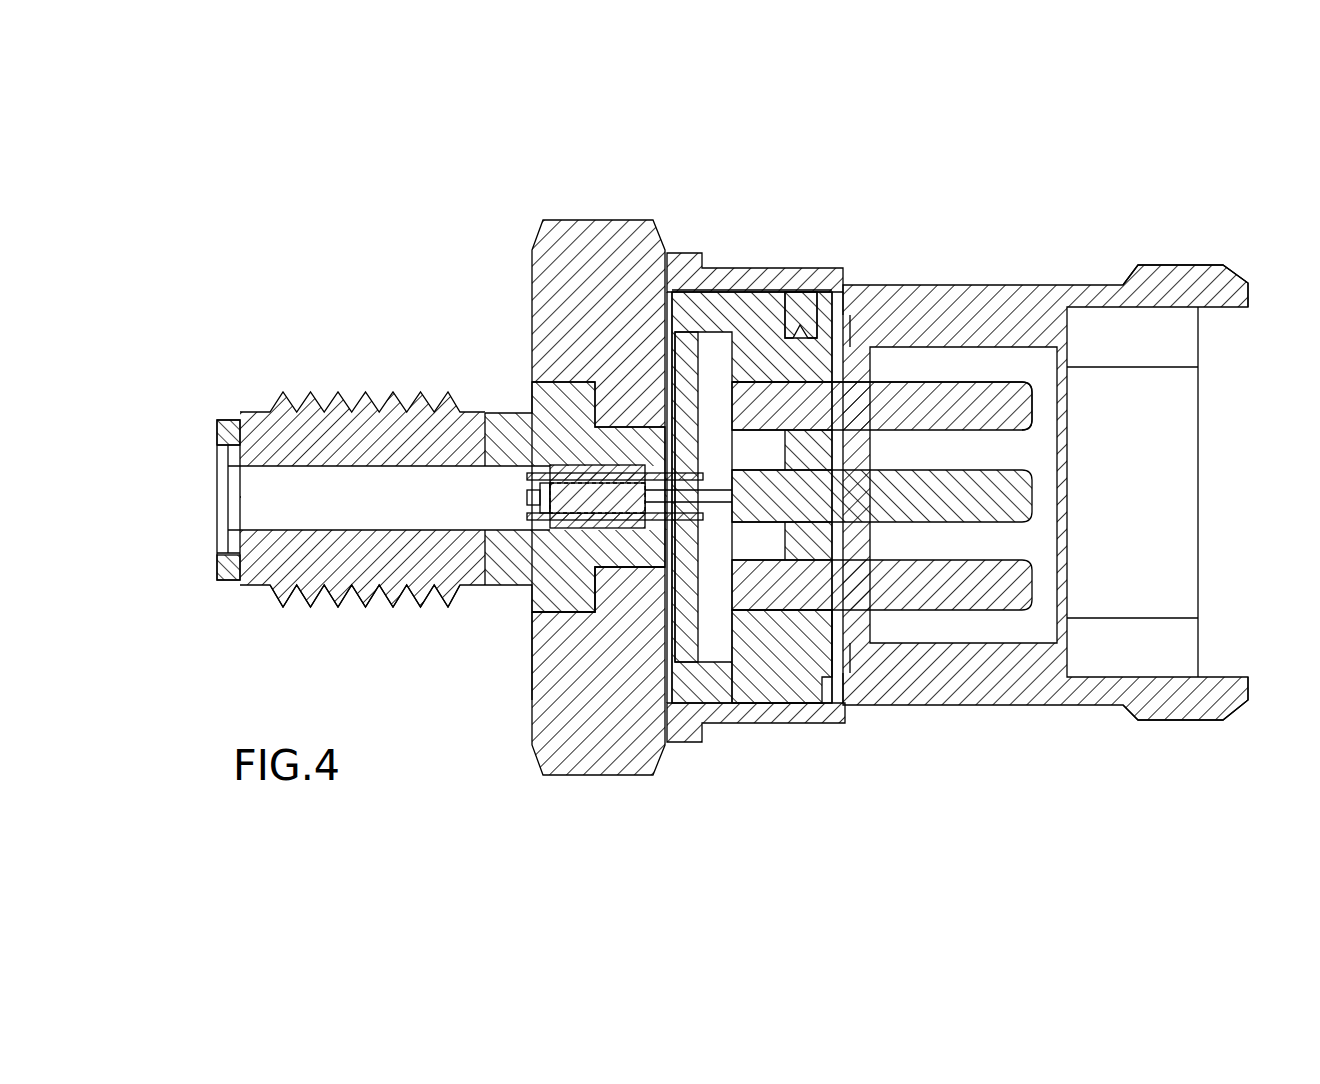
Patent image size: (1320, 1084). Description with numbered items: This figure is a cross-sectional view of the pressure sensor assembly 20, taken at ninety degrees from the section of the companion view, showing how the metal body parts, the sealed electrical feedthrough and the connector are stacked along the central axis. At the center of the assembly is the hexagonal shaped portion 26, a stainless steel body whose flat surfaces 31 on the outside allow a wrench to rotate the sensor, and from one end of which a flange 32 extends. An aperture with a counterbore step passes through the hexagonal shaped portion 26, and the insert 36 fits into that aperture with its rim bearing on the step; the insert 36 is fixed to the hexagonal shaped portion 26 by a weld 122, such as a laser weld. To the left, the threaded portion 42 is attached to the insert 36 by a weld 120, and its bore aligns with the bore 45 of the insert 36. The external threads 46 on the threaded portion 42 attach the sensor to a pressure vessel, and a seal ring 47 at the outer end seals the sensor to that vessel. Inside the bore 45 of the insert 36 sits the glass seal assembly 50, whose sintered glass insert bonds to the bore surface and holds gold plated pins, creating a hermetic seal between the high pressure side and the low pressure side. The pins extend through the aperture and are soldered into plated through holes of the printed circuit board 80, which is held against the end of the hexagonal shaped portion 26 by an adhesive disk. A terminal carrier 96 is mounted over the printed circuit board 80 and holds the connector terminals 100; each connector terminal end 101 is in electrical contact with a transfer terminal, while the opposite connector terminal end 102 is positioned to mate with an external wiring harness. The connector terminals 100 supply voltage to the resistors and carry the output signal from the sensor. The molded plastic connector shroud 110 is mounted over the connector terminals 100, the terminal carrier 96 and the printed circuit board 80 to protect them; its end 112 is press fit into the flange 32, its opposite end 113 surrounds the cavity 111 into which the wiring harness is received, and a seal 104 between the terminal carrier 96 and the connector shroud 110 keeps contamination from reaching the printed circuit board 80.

The pressure sensor assembly 20 is at (372, 214).
The hexagonal shaped portion 26 is at (600, 206).
The flat surfaces 31 is at (585, 775).
The flange 32 is at (690, 742).
The insert 36 is at (500, 405).
The threaded portion 42 is at (356, 388).
The bore 45 is at (240, 505).
The external threads 46 is at (312, 603).
The seal ring 47 is at (210, 420).
The glass seal assembly 50 is at (530, 652).
The printed circuit board 80 is at (700, 370).
The terminal carrier 96 is at (760, 320).
The connector terminals 100 is at (917, 383).
The connector terminal end 101 is at (757, 600).
The connector terminal end 102 is at (1022, 393).
The seal 104 is at (803, 328).
The connector shroud 110 is at (977, 716).
The cavity 111 is at (1118, 500).
The end 112 is at (822, 723).
The end 113 is at (1195, 730).
The weld 120 is at (487, 583).
The weld 122 is at (527, 612).